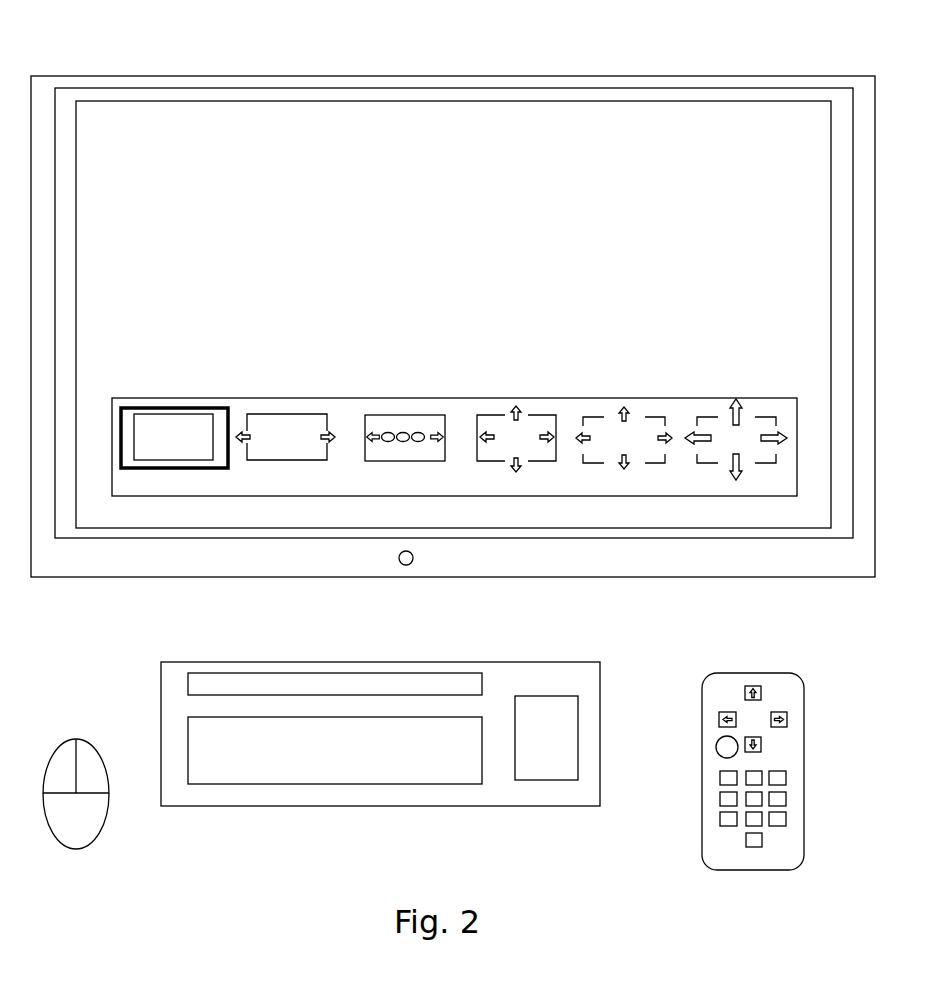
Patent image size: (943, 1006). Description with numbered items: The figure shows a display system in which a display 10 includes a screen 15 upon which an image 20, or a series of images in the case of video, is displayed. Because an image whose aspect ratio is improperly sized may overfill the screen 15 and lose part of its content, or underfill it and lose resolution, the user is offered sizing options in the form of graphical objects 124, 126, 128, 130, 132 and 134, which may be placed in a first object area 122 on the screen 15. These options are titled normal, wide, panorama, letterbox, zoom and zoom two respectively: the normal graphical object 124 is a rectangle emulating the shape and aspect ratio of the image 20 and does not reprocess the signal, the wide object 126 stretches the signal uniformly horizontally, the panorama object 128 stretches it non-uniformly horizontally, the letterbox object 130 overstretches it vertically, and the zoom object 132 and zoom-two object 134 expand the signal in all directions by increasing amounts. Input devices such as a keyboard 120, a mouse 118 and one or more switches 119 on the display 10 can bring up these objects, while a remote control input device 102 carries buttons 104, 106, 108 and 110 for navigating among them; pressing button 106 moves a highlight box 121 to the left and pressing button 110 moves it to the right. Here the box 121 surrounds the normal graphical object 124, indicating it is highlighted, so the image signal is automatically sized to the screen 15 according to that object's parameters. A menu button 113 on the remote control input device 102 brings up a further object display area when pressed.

The display 10 is at (578, 76).
The screen 15 is at (662, 88).
The image 20 is at (750, 101).
The remote control input device 102 is at (736, 761).
The button 104 is at (763, 745).
The button 106 is at (719, 712).
The button 108 is at (748, 686).
The button 110 is at (784, 712).
The menu (M) button 113 is at (718, 738).
The mouse 118 is at (92, 842).
The switch 119 is at (399, 564).
The keyboard 120 is at (386, 804).
The highlight box 121 is at (183, 413).
The first object area 122 is at (316, 381).
The graphical object ('normal') 124 is at (180, 401).
The graphical object ('wide') 126 is at (287, 414).
The graphical object ('panorama') 128 is at (405, 415).
The graphical object ('letterbox') 130 is at (493, 415).
The graphical object ('zoom') 132 is at (597, 417).
The graphical object ('zoom 2') 134 is at (705, 417).